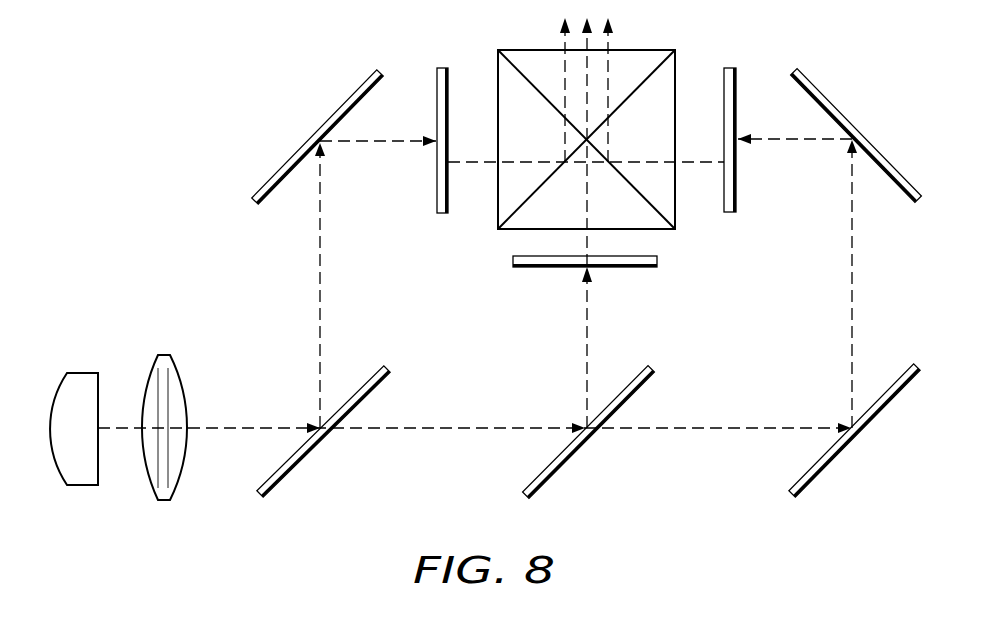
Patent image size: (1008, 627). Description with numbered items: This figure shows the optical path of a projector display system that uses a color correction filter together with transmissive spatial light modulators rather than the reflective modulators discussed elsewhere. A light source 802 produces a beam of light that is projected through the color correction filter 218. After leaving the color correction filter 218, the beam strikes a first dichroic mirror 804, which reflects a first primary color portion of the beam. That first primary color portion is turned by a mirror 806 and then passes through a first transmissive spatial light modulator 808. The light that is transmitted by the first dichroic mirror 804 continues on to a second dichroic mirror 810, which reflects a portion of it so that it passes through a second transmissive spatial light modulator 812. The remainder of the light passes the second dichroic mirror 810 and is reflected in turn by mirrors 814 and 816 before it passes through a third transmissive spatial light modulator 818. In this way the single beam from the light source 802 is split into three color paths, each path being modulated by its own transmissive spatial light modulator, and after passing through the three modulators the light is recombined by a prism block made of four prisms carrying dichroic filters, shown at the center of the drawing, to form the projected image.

The light source 802 is at (80, 487).
The color correction filter 218 is at (160, 503).
The first dichroic mirror 804 is at (310, 452).
The mirror 806 is at (333, 112).
The first transmissive spatial light modulator 808 is at (444, 67).
The second dichroic mirror 810 is at (577, 450).
The second transmissive spatial light modulator 812 is at (658, 262).
The mirror 814 is at (842, 452).
The mirror 816 is at (840, 108).
The third transmissive spatial light modulator 818 is at (733, 67).